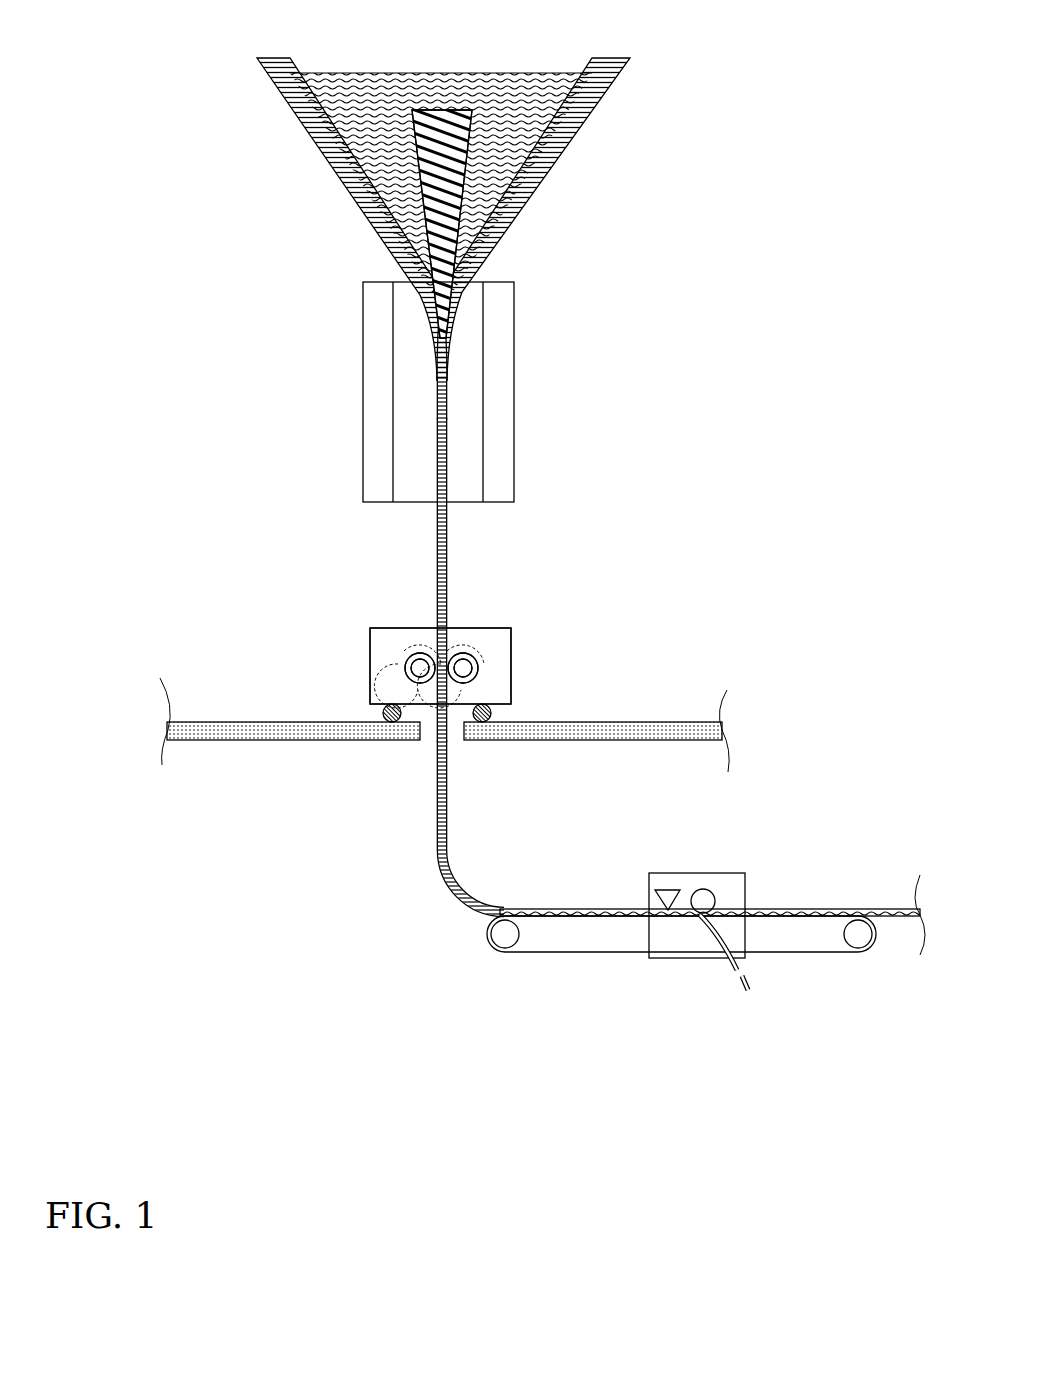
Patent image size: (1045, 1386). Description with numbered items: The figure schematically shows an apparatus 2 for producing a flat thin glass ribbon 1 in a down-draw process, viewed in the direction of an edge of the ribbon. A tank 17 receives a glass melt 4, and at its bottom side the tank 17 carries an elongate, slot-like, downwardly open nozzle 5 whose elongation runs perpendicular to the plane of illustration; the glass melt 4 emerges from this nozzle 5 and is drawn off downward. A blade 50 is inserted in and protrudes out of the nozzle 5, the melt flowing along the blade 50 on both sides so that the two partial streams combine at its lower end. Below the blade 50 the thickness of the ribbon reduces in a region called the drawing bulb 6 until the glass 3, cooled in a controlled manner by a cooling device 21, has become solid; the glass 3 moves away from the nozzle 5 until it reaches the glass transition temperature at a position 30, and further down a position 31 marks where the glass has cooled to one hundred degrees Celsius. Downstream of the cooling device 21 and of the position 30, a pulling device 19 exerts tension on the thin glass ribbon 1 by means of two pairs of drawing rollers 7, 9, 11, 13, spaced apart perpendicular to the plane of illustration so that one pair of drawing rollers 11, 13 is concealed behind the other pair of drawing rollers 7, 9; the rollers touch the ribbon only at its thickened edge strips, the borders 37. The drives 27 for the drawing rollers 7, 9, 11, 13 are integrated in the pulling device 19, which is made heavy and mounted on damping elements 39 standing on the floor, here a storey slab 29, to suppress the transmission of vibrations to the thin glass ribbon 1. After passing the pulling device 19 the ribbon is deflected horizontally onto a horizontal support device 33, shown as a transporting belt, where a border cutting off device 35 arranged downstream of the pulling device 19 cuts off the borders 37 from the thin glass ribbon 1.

The thin glass ribbon 1 is at (577, 895).
The apparatus 2 is at (888, 199).
The glass 3 is at (448, 778).
The glass melt 4 is at (503, 100).
The nozzle 5 is at (463, 300).
The drawing bulb 6 is at (425, 348).
The drawing roller 7 is at (418, 652).
The drawing roller 9 is at (470, 652).
The drawing roller 11 is at (418, 652).
The drawing roller 13 is at (470, 652).
The tank 17 is at (523, 212).
The pulling device 19 is at (512, 652).
The cooling device 21 is at (514, 397).
The drives 27 is at (395, 665).
The storey slab 29 is at (668, 720).
The position 30 is at (420, 525).
The position 31 is at (440, 648).
The horizontal support device 33 is at (525, 952).
The border cutting off device 35 is at (730, 873).
The borders 37 is at (695, 925).
The damping elements 39 is at (385, 715).
The blade 50 is at (400, 245).